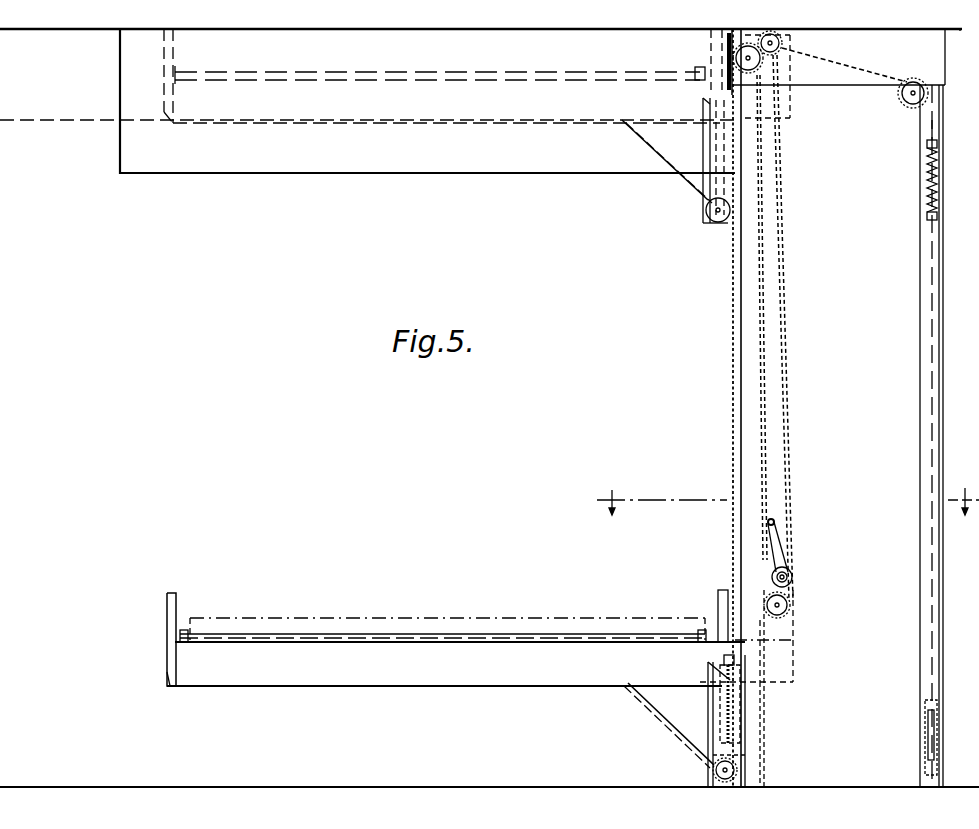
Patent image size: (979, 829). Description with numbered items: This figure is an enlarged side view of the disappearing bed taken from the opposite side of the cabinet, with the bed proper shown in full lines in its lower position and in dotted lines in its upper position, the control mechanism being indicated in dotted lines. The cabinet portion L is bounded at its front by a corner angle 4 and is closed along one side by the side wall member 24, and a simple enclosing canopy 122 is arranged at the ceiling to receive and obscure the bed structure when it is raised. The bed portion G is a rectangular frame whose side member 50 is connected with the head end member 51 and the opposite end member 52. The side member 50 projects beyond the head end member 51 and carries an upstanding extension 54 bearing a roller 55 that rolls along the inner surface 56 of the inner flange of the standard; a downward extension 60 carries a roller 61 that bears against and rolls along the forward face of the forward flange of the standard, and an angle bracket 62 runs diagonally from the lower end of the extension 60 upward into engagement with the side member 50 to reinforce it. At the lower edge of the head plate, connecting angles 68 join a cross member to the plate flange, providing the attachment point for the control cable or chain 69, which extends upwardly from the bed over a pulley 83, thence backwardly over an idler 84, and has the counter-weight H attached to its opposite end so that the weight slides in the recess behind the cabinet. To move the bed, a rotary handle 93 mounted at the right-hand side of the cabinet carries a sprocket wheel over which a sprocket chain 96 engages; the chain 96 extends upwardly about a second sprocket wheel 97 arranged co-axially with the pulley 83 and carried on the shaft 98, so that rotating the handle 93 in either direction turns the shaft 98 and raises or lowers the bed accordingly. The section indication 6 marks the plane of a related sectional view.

The enclosing canopy 122 is at (239, 162).
The corner angle 4 is at (740, 380).
The control cable or chain 69 is at (733, 535).
The pulley 83 is at (727, 52).
The shaft 98 is at (762, 68).
The idler 84 is at (912, 108).
The side wall member 24 is at (895, 436).
The cabinet portion L is at (907, 203).
The bed counter-weight H is at (937, 205).
The sprocket chain 96 is at (786, 440).
The second sprocket wheel 97 is at (775, 97).
The rotary handle 93 is at (774, 521).
The roller 55 is at (790, 605).
The upstanding extension 54 is at (793, 640).
The inner surface 56 is at (766, 710).
The bed portion G is at (364, 677).
The side member 50 is at (549, 678).
The end member 52 is at (176, 605).
The head end member 51 is at (718, 600).
The downward extension 60 is at (708, 782).
The connecting angle 68 is at (730, 745).
The roller 61 is at (737, 770).
The angle bracket 62 is at (658, 712).
The section line 6- 6 is at (776, 512).